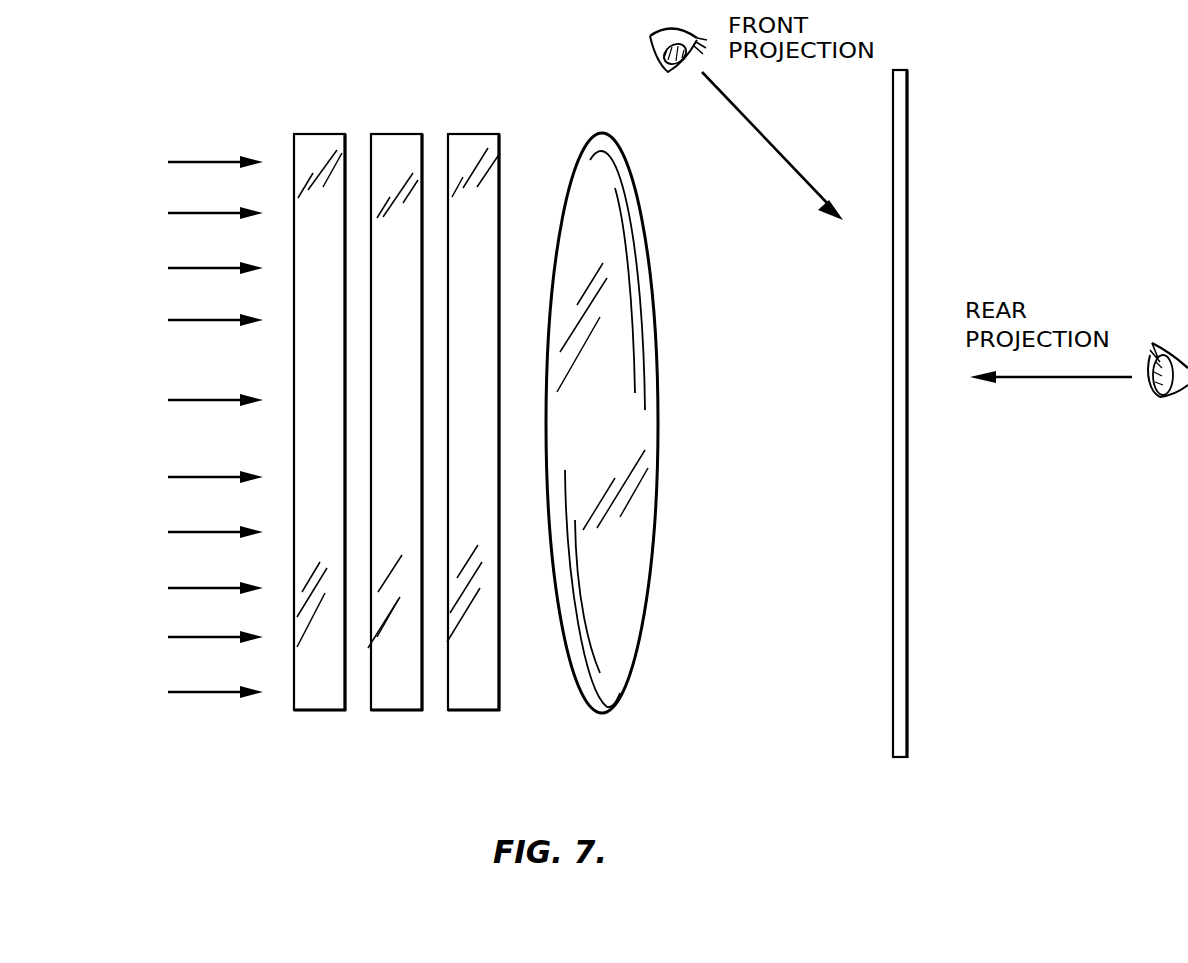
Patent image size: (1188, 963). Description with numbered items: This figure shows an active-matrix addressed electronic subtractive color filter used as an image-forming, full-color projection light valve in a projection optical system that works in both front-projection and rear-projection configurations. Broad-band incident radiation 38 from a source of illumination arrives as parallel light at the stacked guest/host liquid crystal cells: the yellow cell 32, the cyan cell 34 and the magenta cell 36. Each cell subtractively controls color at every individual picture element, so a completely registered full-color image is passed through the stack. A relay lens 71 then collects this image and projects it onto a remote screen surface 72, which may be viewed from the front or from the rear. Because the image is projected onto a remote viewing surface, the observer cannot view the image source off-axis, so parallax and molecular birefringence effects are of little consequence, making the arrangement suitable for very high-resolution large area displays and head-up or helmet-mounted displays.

The incident radiation 38 is at (200, 162).
The yellow cell 32 is at (317, 133).
The cyan cell 34 is at (395, 133).
The magenta cell 36 is at (475, 133).
The relay lens 71 is at (657, 350).
The projection screen surface 72 is at (910, 172).